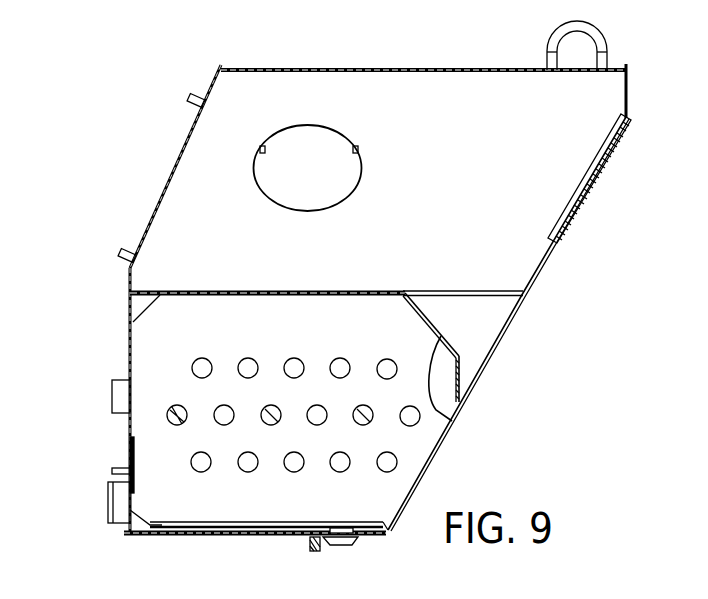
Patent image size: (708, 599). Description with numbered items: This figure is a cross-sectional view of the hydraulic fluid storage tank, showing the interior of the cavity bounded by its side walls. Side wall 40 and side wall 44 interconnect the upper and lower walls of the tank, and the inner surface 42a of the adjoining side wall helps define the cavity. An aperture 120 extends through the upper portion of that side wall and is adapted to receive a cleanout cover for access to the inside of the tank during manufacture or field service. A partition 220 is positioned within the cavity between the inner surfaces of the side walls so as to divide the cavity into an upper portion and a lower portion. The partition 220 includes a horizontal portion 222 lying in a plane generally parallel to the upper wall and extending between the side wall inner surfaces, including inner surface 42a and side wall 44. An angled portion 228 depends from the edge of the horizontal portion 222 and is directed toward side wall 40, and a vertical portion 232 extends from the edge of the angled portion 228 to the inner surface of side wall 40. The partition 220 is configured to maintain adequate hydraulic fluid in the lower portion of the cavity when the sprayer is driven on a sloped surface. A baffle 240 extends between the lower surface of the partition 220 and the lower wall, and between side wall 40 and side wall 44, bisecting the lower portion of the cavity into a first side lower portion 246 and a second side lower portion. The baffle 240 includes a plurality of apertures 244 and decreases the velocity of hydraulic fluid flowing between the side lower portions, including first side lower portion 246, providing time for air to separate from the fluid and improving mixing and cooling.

The side wall 40 is at (588, 178).
The side wall 44 is at (156, 205).
The inner surface of side wall 42a is at (498, 246).
The aperture 120 is at (360, 172).
The partition 220 is at (149, 297).
The horizontal portion 222 is at (283, 290).
The baffle 240 is at (443, 324).
The vertical portion 232 is at (461, 373).
The angled portion 228 is at (453, 420).
The apertures 244 is at (386, 366).
The first side lower portion 246 is at (320, 509).